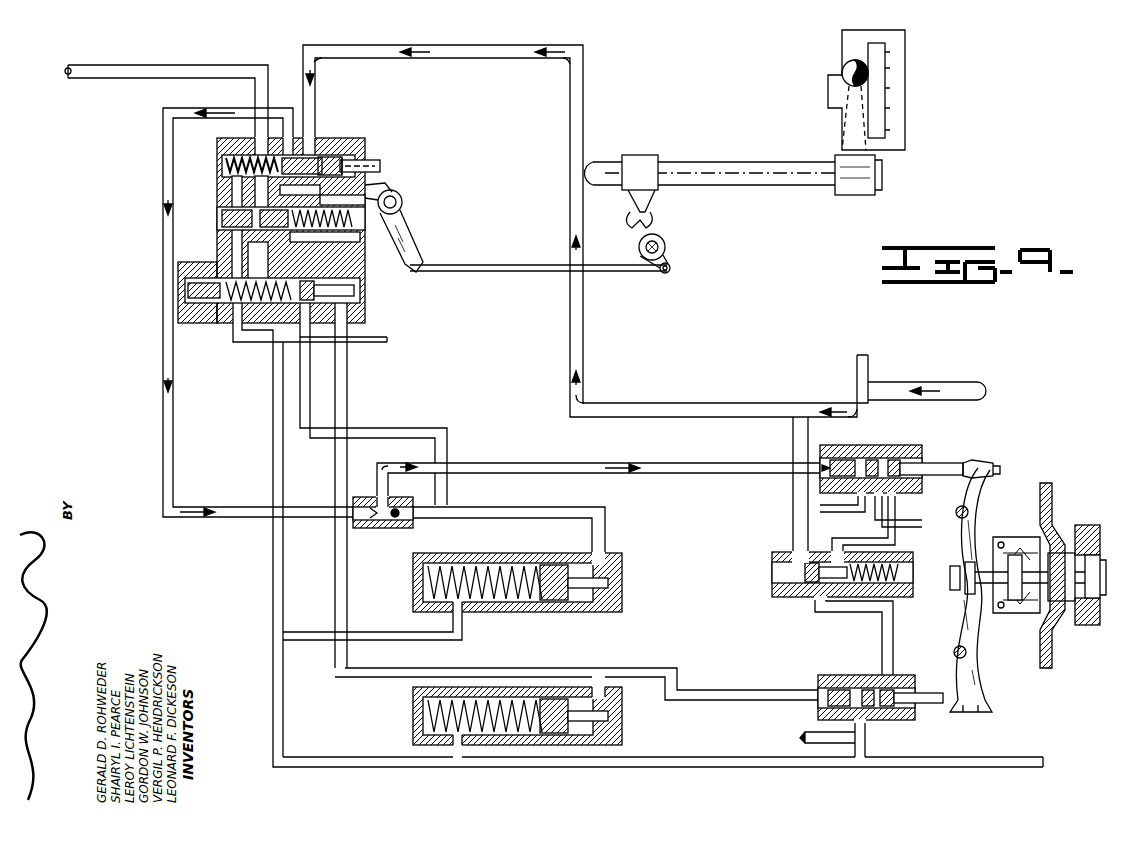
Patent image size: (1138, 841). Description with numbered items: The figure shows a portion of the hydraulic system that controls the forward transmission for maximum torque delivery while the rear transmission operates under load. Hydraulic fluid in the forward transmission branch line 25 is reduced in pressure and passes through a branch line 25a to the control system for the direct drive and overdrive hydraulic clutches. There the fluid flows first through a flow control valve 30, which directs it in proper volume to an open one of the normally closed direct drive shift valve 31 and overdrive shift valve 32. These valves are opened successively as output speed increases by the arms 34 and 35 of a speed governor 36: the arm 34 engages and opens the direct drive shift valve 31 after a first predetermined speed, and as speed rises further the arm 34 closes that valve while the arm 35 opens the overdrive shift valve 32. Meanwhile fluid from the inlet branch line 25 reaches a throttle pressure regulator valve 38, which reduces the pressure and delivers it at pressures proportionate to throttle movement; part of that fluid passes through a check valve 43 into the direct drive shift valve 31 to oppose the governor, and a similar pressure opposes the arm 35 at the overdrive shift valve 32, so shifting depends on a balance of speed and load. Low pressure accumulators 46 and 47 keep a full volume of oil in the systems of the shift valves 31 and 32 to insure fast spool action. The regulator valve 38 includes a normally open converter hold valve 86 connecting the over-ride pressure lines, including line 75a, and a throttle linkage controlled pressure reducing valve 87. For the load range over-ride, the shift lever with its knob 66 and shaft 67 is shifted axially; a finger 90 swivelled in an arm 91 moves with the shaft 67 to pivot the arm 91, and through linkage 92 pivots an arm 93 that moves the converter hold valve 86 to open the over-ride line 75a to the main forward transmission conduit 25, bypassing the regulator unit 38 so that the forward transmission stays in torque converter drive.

The forward transmission branch line 25 is at (585, 320).
The branch line 25a is at (793, 505).
The flow control valve 30 is at (772, 580).
The direct drive shift valve 31 is at (870, 445).
The overdrive shift valve 32 is at (905, 722).
The arm 34 is at (975, 520).
The arm 35 is at (975, 660).
The speed governor 36 is at (955, 585).
The throttle pressure regulator valve 38 is at (312, 222).
The check valve 43 is at (395, 522).
The low pressure accumulator 46 is at (622, 572).
The low pressure accumulator 47 is at (622, 722).
The shift lever knob and gate 66 is at (840, 68).
The shaft 67 is at (706, 163).
The over-ride pressure line 75a is at (163, 244).
The converter hold valve 86 is at (350, 142).
The pressure reducing valve 87 is at (222, 218).
The finger 90 is at (652, 205).
The arm 91 is at (664, 236).
The linkage 92 is at (478, 265).
The arm 93 is at (400, 218).